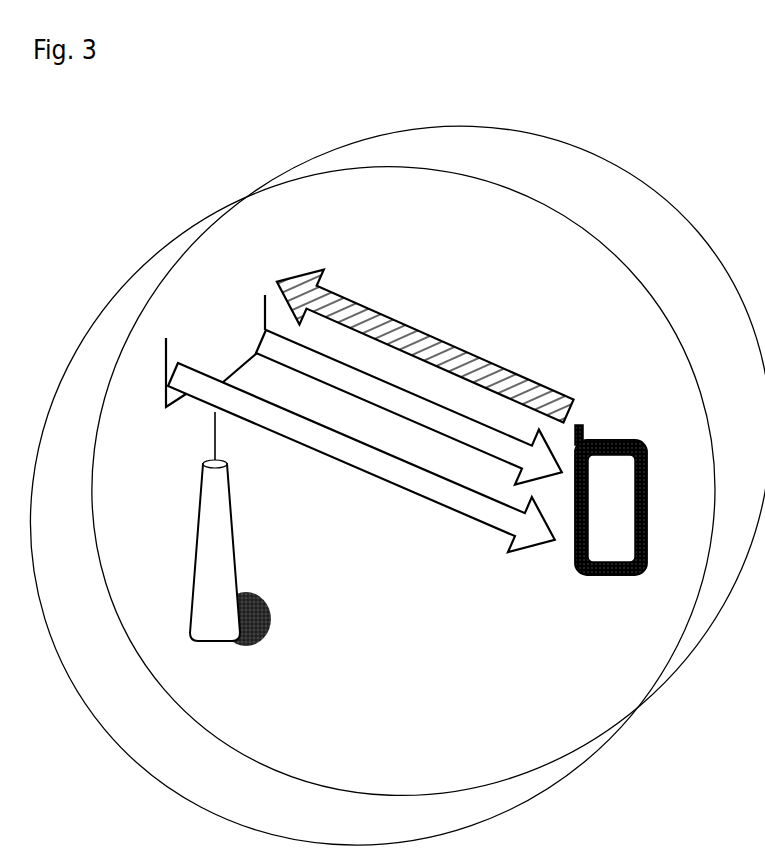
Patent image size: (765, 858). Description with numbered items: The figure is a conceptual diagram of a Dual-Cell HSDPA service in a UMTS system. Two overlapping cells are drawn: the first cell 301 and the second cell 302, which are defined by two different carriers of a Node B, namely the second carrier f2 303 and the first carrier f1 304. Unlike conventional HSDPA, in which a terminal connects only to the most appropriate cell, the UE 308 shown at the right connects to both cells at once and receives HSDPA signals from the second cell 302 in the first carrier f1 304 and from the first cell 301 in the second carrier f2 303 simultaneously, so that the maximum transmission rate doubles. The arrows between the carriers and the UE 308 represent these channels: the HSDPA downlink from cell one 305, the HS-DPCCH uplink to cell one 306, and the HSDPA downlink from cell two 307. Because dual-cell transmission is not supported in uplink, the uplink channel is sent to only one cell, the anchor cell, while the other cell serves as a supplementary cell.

The first cell 301 is at (422, 123).
The second cell 302 is at (148, 265).
The second carrier f2 303 is at (168, 314).
The first carrier f1 304 is at (265, 272).
The HSDPA downlink channel from cell 1 305 is at (514, 434).
The HS-DPCCH uplink channel to cell 1 306 is at (565, 393).
The HSDPA downlink channel from cell 2 307 is at (453, 518).
The UE 308 is at (610, 576).